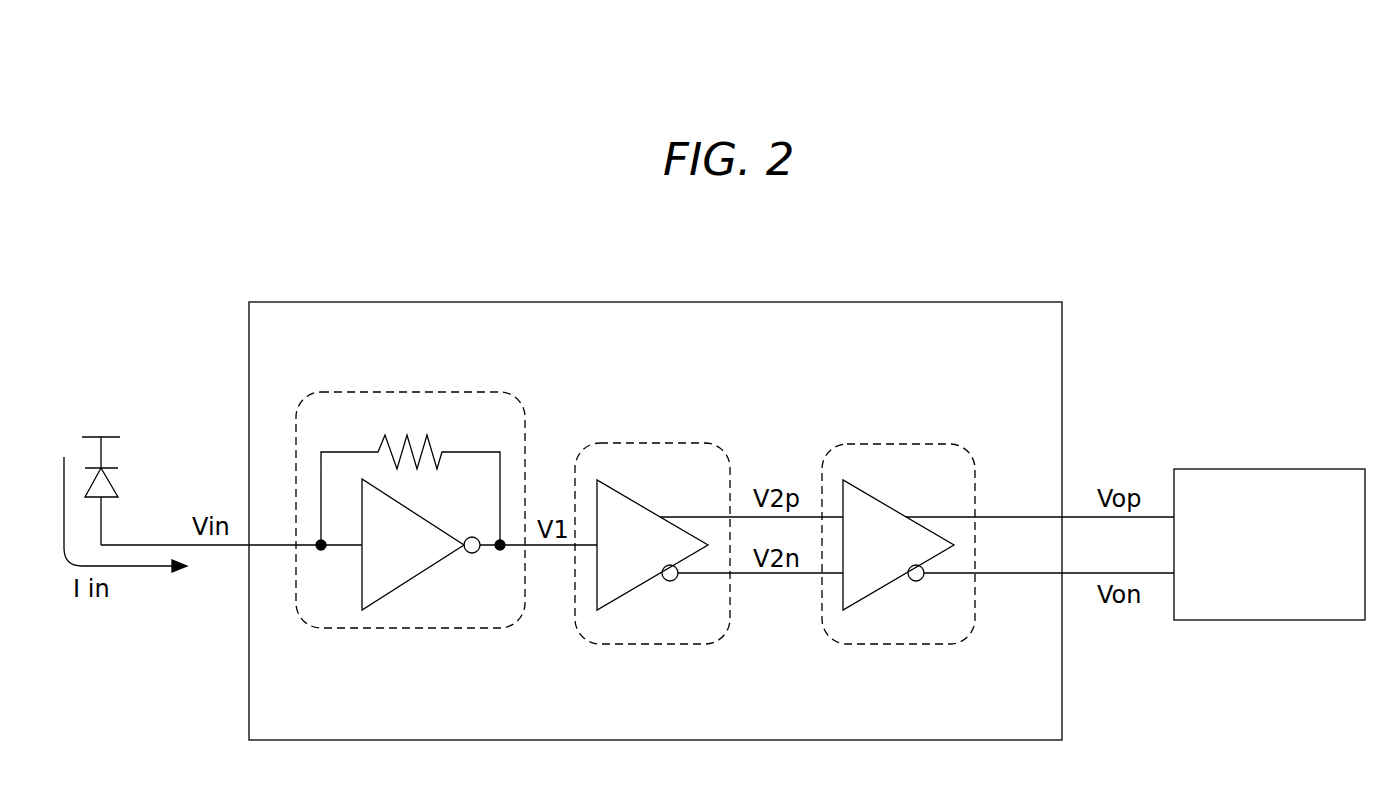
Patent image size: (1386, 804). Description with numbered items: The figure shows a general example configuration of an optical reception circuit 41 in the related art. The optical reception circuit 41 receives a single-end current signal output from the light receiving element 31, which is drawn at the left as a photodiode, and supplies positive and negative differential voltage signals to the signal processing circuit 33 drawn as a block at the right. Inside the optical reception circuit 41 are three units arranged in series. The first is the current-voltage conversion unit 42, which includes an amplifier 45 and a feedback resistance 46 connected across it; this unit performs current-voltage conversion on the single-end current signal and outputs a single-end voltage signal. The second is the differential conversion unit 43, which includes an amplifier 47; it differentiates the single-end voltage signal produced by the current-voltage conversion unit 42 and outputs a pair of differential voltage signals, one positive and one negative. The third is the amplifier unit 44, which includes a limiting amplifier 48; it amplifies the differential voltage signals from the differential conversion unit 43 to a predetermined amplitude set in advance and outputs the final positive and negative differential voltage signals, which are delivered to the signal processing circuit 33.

The light receiving element 31 is at (112, 482).
The signal processing circuit 33 is at (1272, 469).
The optical reception circuit 41 is at (655, 302).
The current-voltage conversion unit 42 is at (418, 628).
The differential conversion unit 43 is at (652, 644).
The amplifier unit 44 is at (898, 644).
The amplifier 45 is at (418, 514).
The feedback resistance 46 is at (430, 450).
The amplifier 47 is at (636, 503).
The limiting amplifier 48 is at (882, 504).